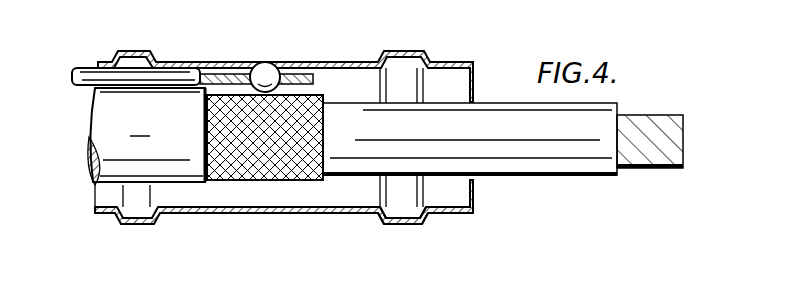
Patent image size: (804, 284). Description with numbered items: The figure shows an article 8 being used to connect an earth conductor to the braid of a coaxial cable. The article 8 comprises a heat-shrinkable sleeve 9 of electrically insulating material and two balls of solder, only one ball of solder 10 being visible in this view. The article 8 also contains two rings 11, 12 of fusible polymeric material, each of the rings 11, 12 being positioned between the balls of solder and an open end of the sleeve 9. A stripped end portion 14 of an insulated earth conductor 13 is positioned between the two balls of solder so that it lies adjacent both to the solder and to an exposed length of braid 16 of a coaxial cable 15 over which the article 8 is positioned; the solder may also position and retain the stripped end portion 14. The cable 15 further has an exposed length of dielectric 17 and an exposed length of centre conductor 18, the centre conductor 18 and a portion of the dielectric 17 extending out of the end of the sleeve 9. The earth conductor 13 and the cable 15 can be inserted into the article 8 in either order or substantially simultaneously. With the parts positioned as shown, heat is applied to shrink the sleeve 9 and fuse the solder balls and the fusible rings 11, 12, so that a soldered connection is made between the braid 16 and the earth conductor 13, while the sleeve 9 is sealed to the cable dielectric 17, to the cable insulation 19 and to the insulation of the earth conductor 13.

The article 8 is at (434, 59).
The heat-shrinkable sleeve 9 is at (335, 62).
The ball of solder 10 is at (266, 63).
The ring of fusible polymeric material 11 is at (133, 223).
The ring of fusible polymeric material 12 is at (394, 223).
The insulated earth conductor 13 is at (80, 66).
The stripped end portion 14 is at (221, 76).
The coaxial cable 15 is at (90, 128).
The exposed length of braid 16 is at (250, 150).
The dielectric 17 is at (540, 150).
The centre conductor 18 is at (650, 150).
The cable insulation 19 is at (127, 148).